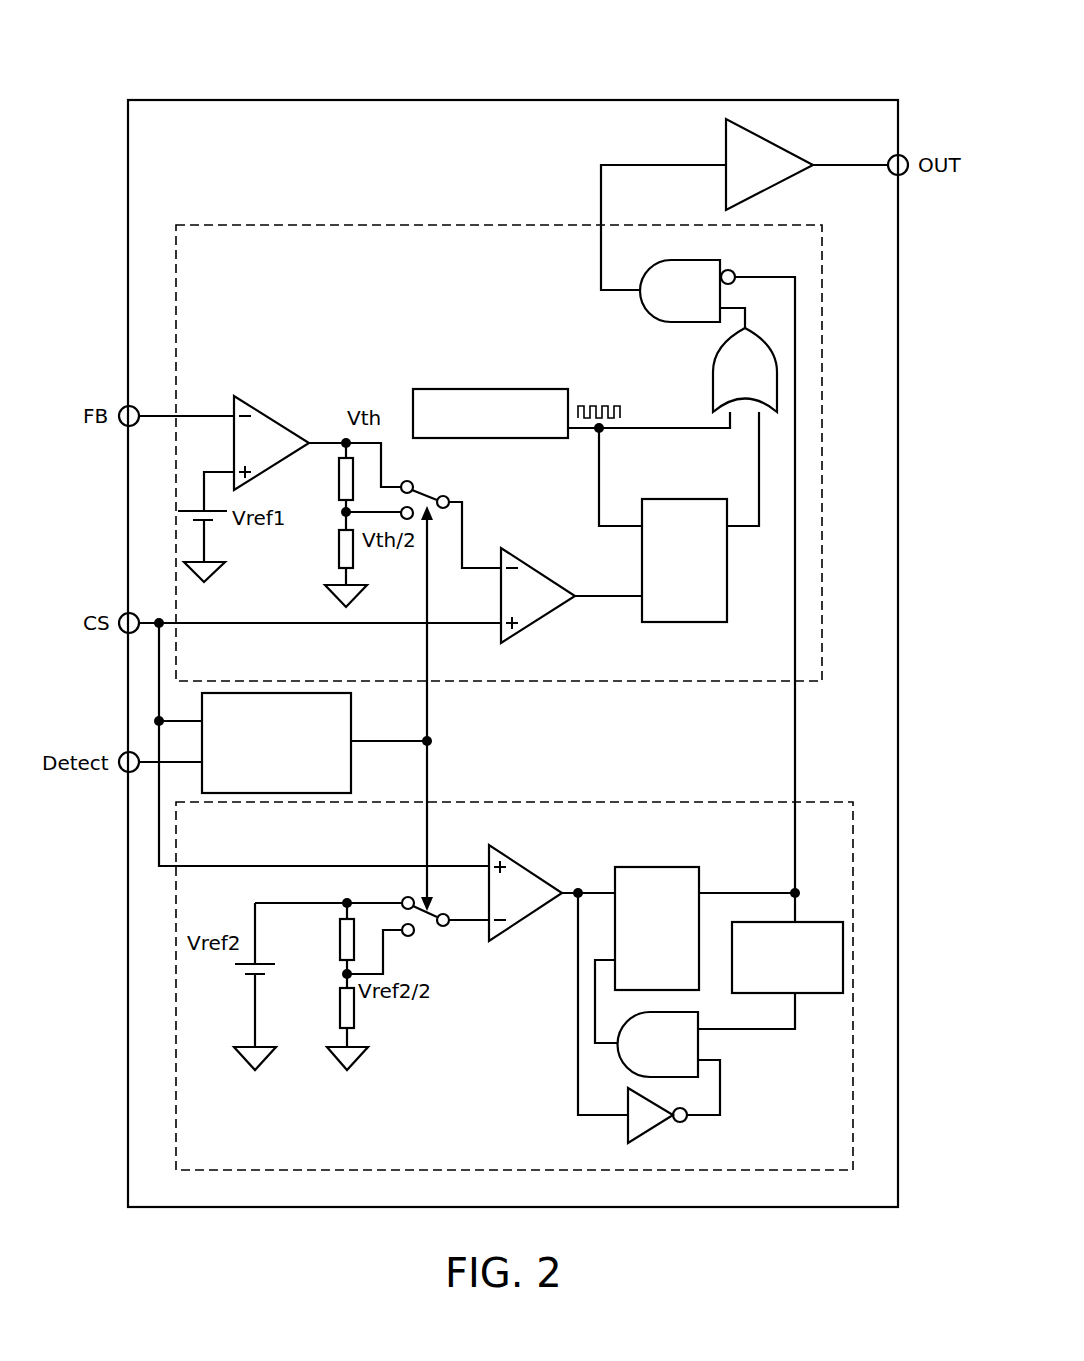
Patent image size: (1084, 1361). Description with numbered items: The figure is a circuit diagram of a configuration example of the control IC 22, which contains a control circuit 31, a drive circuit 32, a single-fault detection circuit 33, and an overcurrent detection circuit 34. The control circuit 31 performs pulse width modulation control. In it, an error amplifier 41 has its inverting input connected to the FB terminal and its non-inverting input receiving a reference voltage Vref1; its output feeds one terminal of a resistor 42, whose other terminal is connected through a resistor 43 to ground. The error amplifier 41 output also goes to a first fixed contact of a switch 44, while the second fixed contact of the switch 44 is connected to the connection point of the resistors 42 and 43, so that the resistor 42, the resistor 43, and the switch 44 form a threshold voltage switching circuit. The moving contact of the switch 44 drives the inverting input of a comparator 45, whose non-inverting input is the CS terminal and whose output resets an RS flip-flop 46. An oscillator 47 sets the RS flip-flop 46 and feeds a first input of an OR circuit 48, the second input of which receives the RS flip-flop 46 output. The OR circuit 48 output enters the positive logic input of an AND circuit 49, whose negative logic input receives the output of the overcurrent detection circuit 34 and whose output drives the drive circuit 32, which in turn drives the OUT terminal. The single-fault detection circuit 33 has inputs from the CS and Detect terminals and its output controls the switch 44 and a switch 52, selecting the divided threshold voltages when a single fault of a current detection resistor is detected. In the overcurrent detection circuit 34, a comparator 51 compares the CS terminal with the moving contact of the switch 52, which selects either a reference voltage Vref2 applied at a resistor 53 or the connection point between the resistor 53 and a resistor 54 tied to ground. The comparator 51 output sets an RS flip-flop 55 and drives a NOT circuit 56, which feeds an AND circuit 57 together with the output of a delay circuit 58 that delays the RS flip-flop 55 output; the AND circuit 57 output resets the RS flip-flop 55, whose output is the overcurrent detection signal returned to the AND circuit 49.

The control IC 22 is at (450, 100).
The control circuit 31 is at (262, 225).
The drive circuit 32 is at (790, 155).
The single-fault detection circuit 33 is at (351, 723).
The overcurrent detection circuit 34 is at (521, 802).
The error amplifier 41 is at (276, 421).
The resistor 42 is at (339, 480).
The resistor 43 is at (339, 551).
The switch 44 is at (427, 480).
The comparator 45 is at (545, 577).
The RS flip-flop 46 is at (685, 499).
The oscillator 47 is at (507, 389).
The OR circuit 48 is at (713, 372).
The AND circuit 49 is at (706, 260).
The comparator 51 is at (532, 875).
The switch 52 is at (430, 932).
The resistor 53 is at (340, 940).
The resistor 54 is at (340, 1010).
The RS flip-flop 55 is at (657, 867).
The NOT circuit 56 is at (655, 1132).
The AND circuit 57 is at (666, 1012).
The delay circuit 58 is at (825, 922).